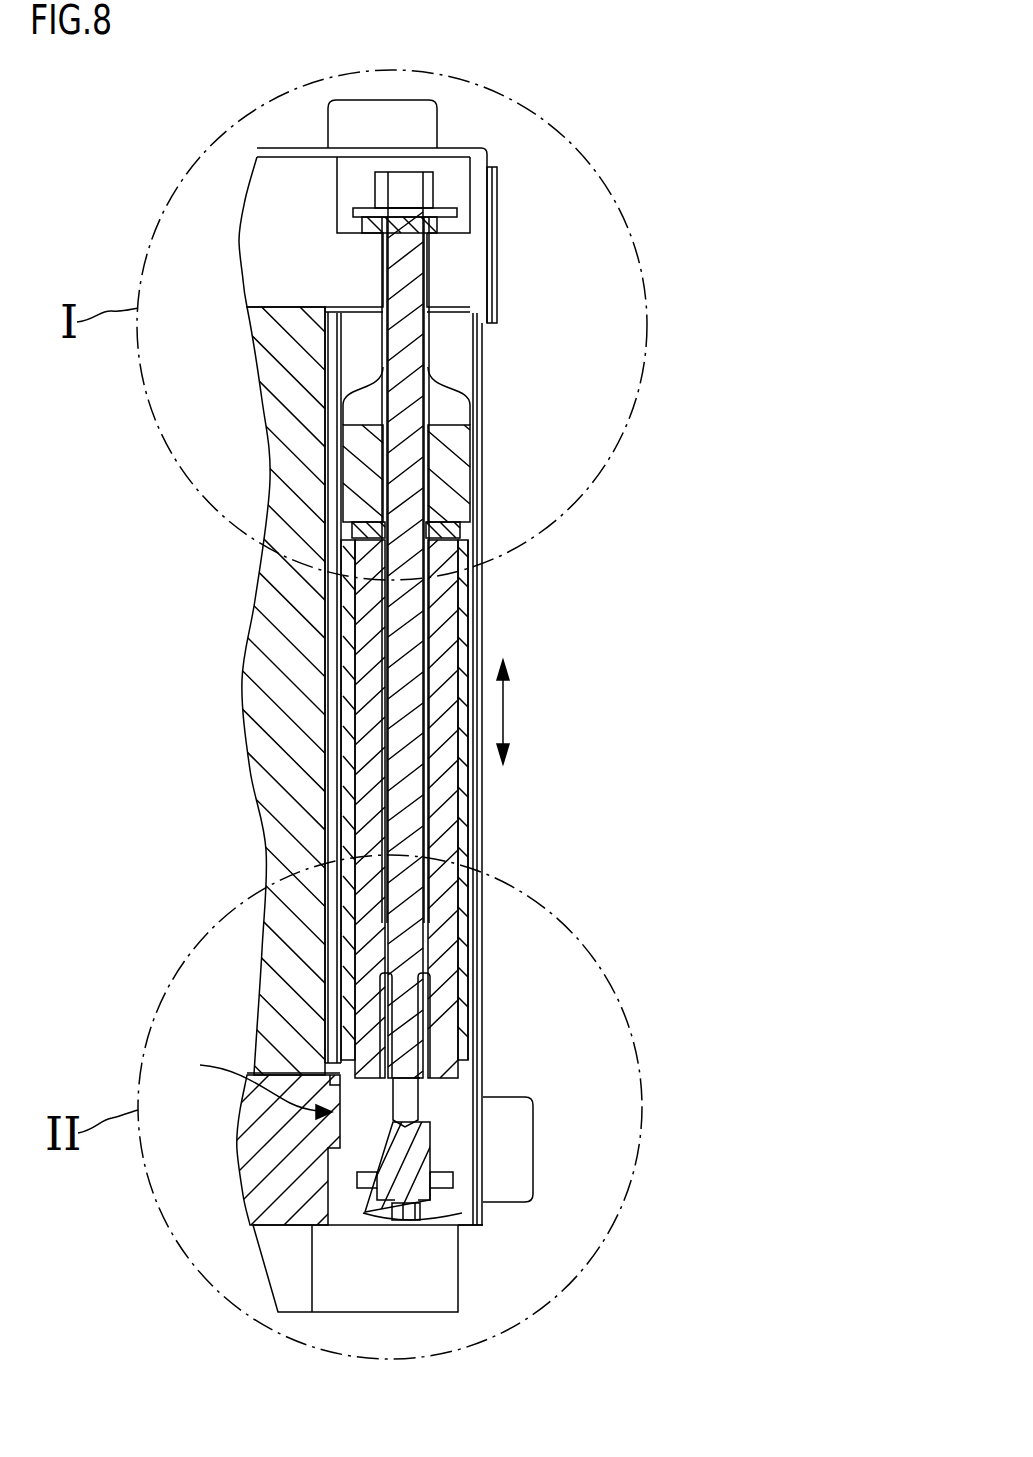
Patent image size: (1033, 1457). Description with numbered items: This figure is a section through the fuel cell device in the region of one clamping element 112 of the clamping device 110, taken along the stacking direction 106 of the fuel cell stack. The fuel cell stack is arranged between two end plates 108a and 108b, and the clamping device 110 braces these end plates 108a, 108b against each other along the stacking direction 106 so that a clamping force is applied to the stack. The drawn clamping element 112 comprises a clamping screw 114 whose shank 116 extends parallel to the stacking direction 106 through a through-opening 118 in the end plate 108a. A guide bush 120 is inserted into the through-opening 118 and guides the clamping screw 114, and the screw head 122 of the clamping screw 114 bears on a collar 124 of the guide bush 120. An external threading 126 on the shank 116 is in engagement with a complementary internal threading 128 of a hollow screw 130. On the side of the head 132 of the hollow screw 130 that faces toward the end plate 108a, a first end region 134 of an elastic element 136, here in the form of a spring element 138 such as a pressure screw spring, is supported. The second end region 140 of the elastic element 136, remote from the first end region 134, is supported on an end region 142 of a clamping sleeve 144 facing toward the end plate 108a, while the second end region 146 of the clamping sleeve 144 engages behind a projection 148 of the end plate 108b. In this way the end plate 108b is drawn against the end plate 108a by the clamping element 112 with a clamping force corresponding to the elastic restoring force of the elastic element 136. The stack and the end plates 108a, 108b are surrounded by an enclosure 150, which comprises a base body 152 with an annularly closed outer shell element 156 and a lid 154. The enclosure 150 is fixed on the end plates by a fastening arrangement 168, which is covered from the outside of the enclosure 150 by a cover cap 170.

The stacking direction 106 is at (507, 714).
The end plate 108a is at (285, 190).
The end plate 108b is at (432, 1273).
The clamping device 110 is at (487, 848).
The clamping element 112 is at (487, 785).
The clamping screw 114 is at (413, 410).
The shank 116 is at (455, 258).
The through-opening 118 is at (420, 292).
The guide bush 120 is at (378, 260).
The screw head 122 is at (433, 190).
The collar 124 is at (443, 222).
The external threading 126 is at (430, 948).
The internal threading 128 is at (425, 1142).
The hollow screw 130 is at (470, 1193).
The head 132 is at (470, 1195).
The first end region 134 is at (440, 1170).
The elastic element 136 is at (440, 1003).
The spring element 138 is at (445, 812).
The second end region 140 is at (447, 552).
The end region 142 is at (457, 465).
The clamping sleeve 144 is at (465, 632).
The second end region 146 is at (330, 1180).
The projection 148 is at (243, 1081).
The enclosure 150 is at (487, 429).
The base body 152 is at (480, 510).
The lid 154 is at (451, 153).
The outer shell element 156 is at (475, 600).
The fastening arrangement 168 is at (510, 1107).
The cover cap 170 is at (540, 1105).